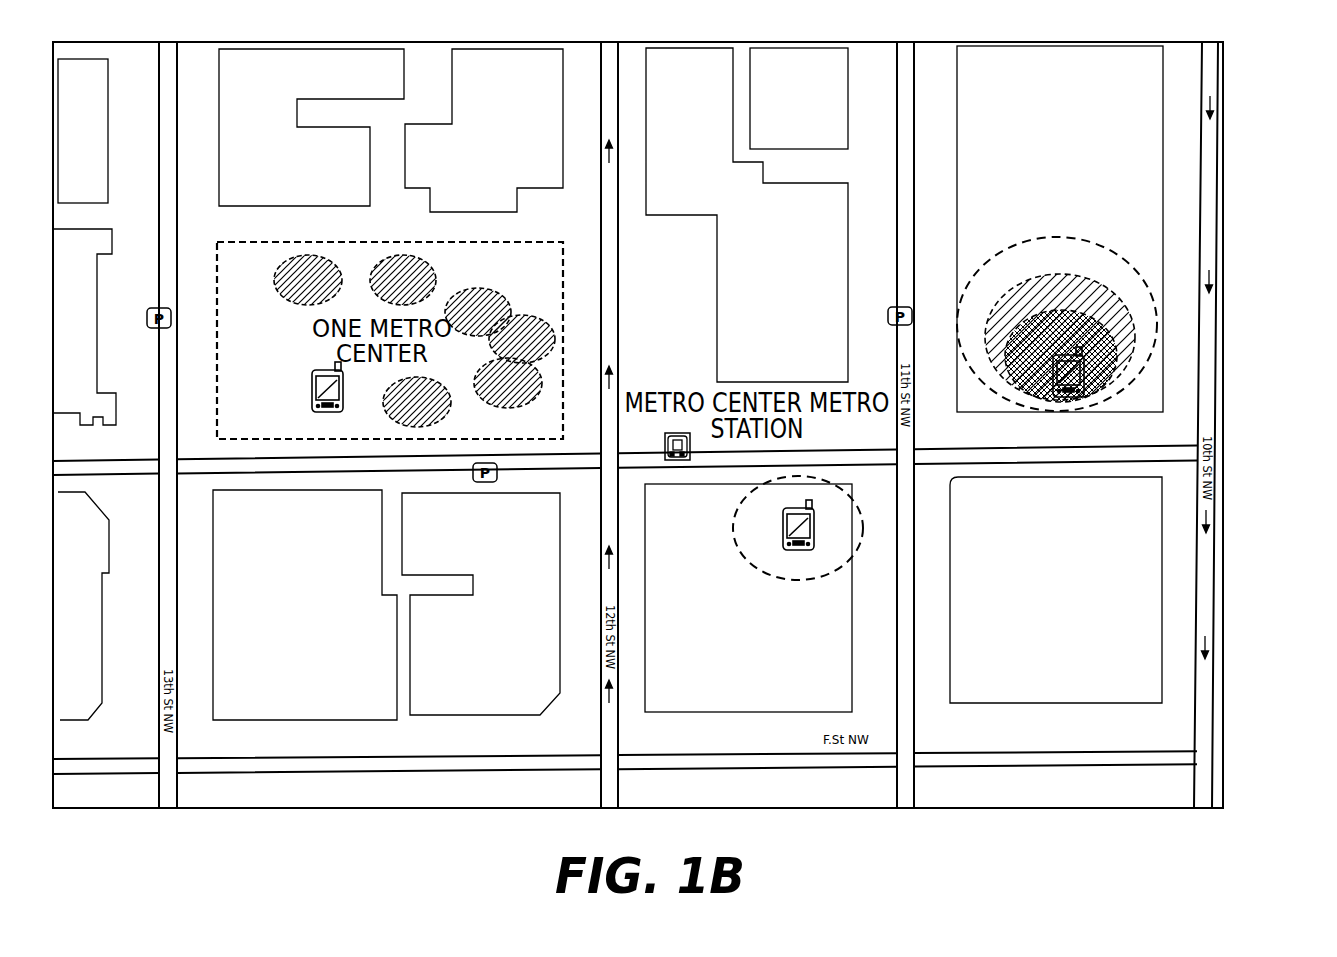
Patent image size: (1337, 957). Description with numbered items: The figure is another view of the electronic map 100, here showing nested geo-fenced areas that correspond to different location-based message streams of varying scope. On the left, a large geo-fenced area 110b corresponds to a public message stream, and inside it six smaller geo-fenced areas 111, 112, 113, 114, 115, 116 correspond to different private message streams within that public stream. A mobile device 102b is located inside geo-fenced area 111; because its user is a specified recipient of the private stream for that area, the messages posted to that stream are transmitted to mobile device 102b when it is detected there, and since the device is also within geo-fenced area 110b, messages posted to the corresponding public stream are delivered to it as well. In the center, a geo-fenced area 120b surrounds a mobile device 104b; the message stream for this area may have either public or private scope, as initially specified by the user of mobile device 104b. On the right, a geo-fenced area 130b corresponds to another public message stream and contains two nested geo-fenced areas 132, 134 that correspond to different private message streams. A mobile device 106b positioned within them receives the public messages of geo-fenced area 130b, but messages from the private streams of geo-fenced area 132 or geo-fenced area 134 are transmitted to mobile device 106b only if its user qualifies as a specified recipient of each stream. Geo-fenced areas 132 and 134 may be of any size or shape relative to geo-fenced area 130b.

The electronic map 100 is at (1223, 112).
The mobile device 102b is at (325, 412).
The mobile device 104b is at (800, 552).
The mobile device 106b is at (1068, 398).
The geo-fenced area 110b is at (563, 238).
The geo-fenced area 111 is at (298, 280).
The geo-fenced area 112 is at (421, 265).
The geo-fenced area 113 is at (482, 290).
The geo-fenced area 114 is at (556, 325).
The geo-fenced area 115 is at (530, 400).
The geo-fenced area 116 is at (415, 427).
The geo-fenced area 120b is at (863, 505).
The geo-fenced area 130b is at (1093, 247).
The geo-fenced area 132 is at (1133, 320).
The geo-fenced area 134 is at (1120, 357).